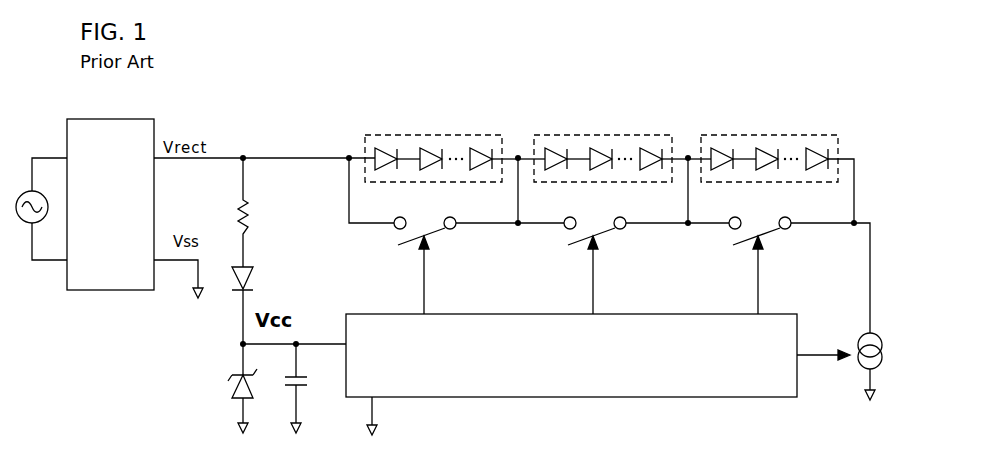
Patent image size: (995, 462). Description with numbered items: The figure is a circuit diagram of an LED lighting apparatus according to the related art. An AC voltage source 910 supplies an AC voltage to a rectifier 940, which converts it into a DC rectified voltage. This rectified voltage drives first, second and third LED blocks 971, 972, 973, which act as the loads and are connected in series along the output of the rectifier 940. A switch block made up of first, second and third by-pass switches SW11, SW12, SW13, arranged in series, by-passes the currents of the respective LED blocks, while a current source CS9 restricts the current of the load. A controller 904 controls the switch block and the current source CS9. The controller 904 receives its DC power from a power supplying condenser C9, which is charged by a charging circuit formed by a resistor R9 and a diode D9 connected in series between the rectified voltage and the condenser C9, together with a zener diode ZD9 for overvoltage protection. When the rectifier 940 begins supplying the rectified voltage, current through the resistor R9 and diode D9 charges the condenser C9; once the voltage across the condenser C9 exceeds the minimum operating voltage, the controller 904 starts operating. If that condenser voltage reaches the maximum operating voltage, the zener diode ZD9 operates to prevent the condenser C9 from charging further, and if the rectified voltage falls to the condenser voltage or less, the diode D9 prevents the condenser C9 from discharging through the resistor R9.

The AC voltage source 910 is at (20, 187).
The rectifier 940 is at (112, 112).
The controller 904 is at (387, 305).
The first LED block 971 is at (408, 118).
The second LED block 972 is at (575, 121).
The third LED block 973 is at (735, 122).
The resistor R9 is at (256, 212).
The diode D9 is at (259, 305).
The zener diode ZD9 is at (225, 388).
The power supplying condenser C9 is at (308, 388).
The current source CS9 is at (857, 359).
The first by-pass switch SW11 is at (456, 265).
The second by-pass switch SW12 is at (603, 265).
The third by-pass switch SW13 is at (779, 275).